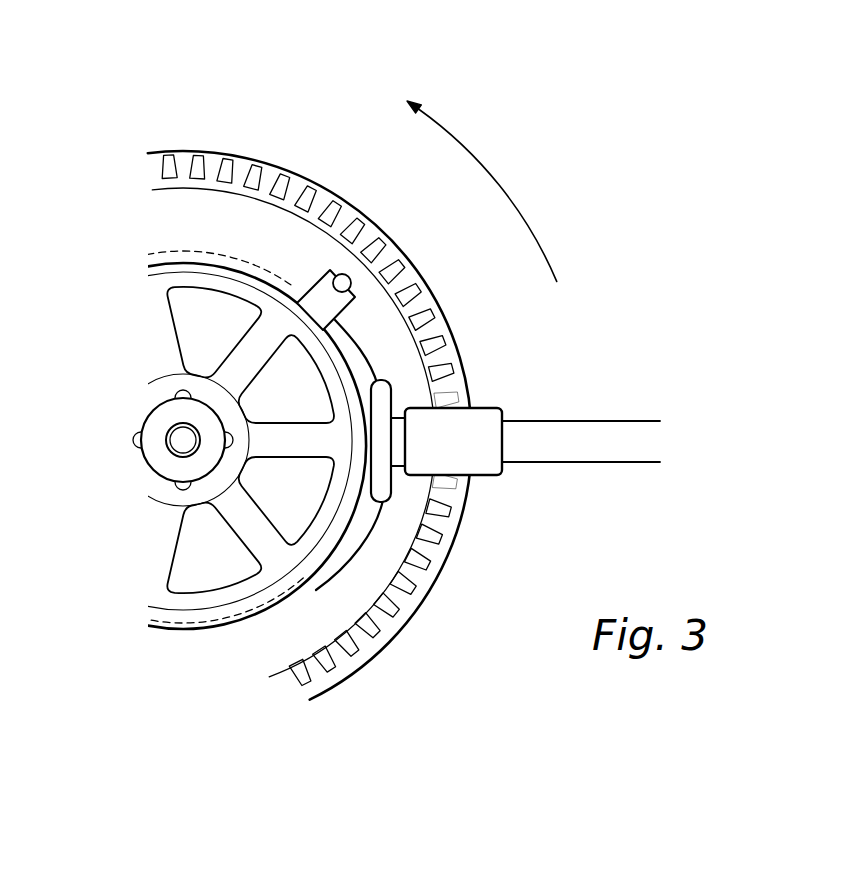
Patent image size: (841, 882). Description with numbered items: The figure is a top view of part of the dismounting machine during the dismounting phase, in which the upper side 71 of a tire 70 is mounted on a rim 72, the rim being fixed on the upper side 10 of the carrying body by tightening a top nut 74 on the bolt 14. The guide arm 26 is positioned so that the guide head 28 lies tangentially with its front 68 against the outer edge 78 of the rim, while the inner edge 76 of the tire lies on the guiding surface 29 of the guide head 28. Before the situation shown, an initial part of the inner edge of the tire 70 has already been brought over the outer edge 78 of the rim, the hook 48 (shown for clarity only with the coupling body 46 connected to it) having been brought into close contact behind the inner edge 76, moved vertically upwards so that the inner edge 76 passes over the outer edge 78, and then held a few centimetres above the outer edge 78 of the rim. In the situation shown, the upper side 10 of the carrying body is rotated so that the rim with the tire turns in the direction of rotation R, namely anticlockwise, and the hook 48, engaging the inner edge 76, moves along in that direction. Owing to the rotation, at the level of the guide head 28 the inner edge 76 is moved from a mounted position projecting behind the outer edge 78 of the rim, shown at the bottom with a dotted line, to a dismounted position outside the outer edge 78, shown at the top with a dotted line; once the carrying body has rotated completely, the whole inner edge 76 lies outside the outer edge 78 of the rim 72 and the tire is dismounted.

The upper side of the carrying body 10 is at (224, 335).
The bolt 14 is at (180, 440).
The guide arm 26 is at (592, 420).
The guide head 28 is at (392, 392).
The guiding surface 29 is at (404, 495).
The coupling body 46 is at (348, 276).
The hook 48 is at (316, 289).
The front 68 is at (360, 447).
The tire 70 is at (197, 152).
The upper side of the tire 71 is at (253, 228).
The rim 72 is at (280, 557).
The top nut 74 is at (163, 412).
The inner edge of the tire 76 is at (365, 343).
The outer edge of the rim 78 is at (183, 253).
The direction of rotation R is at (500, 186).